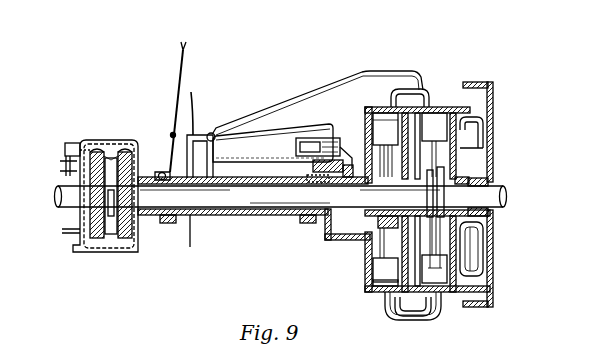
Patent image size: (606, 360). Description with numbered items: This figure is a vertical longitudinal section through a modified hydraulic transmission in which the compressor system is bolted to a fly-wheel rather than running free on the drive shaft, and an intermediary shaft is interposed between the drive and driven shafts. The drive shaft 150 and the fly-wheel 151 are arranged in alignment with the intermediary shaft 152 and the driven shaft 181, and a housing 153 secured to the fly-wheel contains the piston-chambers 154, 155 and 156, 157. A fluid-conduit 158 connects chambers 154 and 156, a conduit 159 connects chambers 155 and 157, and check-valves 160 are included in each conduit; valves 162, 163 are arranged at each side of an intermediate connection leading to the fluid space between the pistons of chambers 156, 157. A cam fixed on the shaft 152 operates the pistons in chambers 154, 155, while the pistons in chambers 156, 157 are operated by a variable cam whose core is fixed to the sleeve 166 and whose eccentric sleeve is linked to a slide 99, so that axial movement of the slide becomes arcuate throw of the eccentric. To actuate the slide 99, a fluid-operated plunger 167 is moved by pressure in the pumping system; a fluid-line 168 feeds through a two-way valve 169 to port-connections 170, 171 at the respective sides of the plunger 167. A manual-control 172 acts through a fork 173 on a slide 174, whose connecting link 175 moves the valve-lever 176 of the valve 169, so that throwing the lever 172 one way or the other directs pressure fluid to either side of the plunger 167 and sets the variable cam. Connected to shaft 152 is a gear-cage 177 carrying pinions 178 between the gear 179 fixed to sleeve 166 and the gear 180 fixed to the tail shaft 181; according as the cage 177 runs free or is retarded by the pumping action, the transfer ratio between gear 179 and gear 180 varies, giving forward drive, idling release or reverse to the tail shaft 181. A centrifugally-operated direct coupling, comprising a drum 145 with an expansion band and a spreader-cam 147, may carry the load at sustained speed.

The slide 99 is at (341, 240).
The drum 145 is at (68, 143).
The centrifugally-operated spreader-cam 147 is at (64, 160).
The drive shaft 150 is at (490, 180).
The fly-wheel 151 is at (493, 124).
The intermediary shaft 152 is at (281, 196).
The housing 153 is at (372, 272).
The piston-chamber 154 is at (460, 115).
The piston-chamber 155 is at (443, 283).
The piston-chamber 156 is at (385, 129).
The piston-chamber 157 is at (378, 283).
The fluid-conduit 158 is at (388, 105).
The conduit 159 is at (400, 312).
The check-valves 160 is at (413, 86).
The valve 162 is at (490, 85).
The valve 163 is at (494, 300).
The sleeve 166 is at (207, 215).
The fluid-operated plunger 167 is at (314, 140).
The fluid-line 168 is at (336, 83).
The two-way valve 169 is at (212, 132).
The port-connection 170 is at (294, 130).
The port-connection 171 is at (257, 162).
The manual-control 172 is at (177, 102).
The fork 173 is at (160, 172).
The slide 174 is at (175, 222).
The connecting link 175 is at (186, 175).
The valve-lever 176 is at (194, 110).
The gear-cage 177 is at (132, 150).
The pinions 178 is at (100, 156).
The gear 179 is at (124, 240).
The gear 180 is at (100, 240).
The driven shaft 181 is at (62, 215).